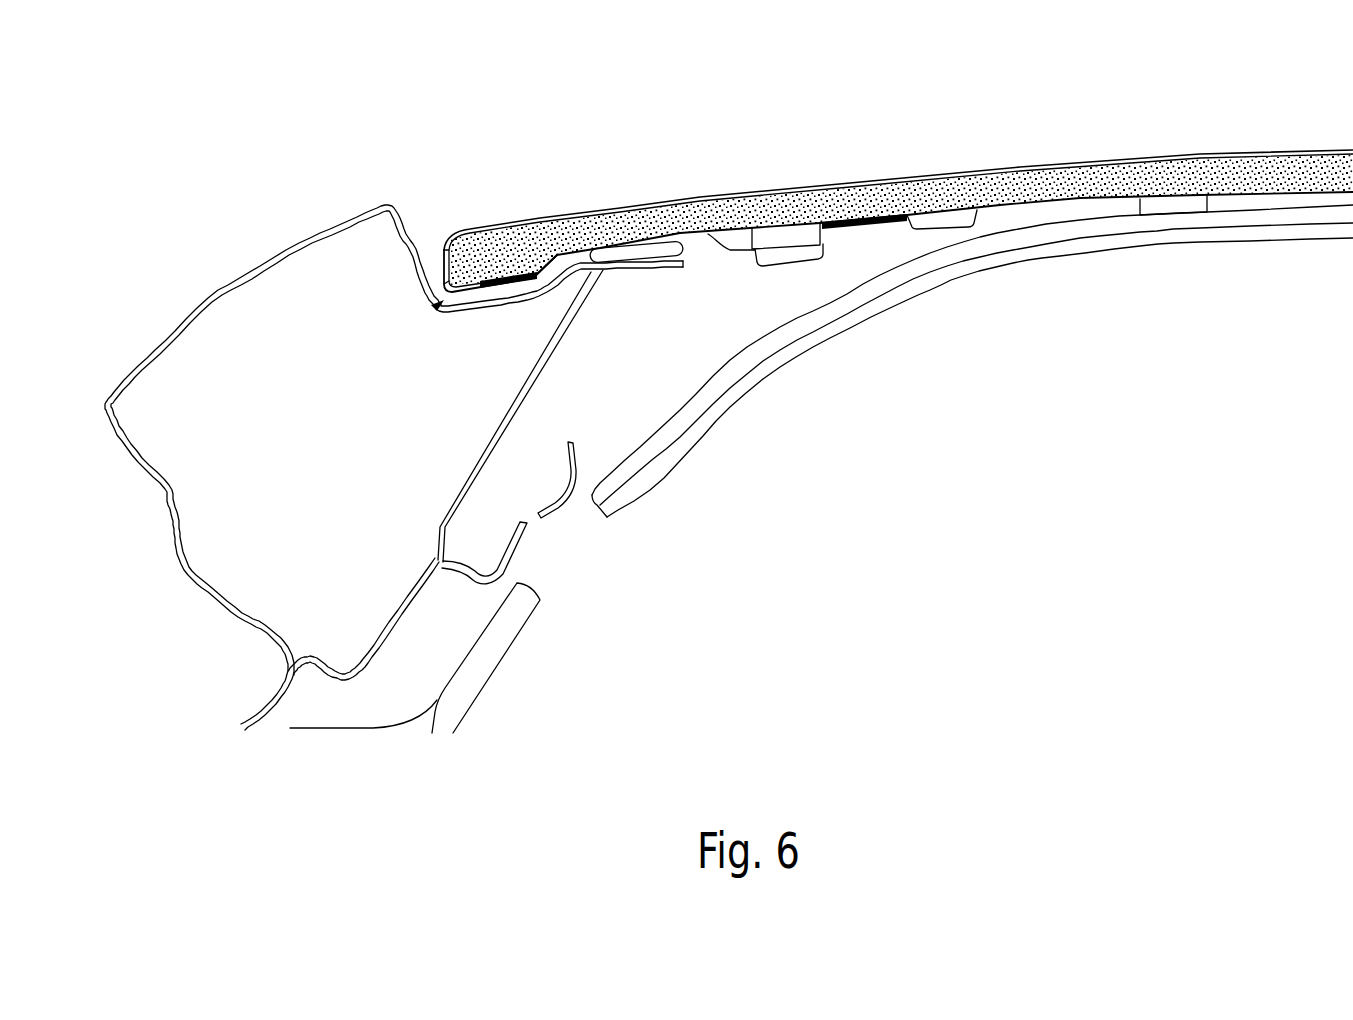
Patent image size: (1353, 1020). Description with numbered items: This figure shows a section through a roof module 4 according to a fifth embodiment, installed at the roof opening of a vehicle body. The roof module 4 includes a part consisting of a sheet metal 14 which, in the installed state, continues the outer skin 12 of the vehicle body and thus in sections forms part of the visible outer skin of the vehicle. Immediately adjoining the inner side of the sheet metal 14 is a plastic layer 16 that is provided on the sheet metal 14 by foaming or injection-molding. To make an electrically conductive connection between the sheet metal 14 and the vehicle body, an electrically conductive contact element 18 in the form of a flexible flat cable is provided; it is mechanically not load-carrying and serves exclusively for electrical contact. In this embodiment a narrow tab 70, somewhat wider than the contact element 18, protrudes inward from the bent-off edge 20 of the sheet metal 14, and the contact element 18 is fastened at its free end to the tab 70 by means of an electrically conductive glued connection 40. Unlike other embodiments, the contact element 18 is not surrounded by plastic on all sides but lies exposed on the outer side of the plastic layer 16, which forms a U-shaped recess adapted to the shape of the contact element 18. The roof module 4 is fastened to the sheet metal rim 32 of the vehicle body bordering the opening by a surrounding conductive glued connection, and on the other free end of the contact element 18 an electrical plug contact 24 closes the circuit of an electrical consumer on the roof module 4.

The roof module 4 is at (1122, 146).
The outer skin 12 is at (228, 292).
The sheet metal 14 is at (983, 177).
The plastic layer 16 is at (855, 203).
The contact element 18 is at (548, 270).
The bent-off edge 20 is at (447, 262).
The plug contact 24 is at (810, 265).
The sheet metal rim 32 is at (628, 252).
The electrically conductive glued connection 40 is at (510, 283).
The tab 70 is at (437, 306).